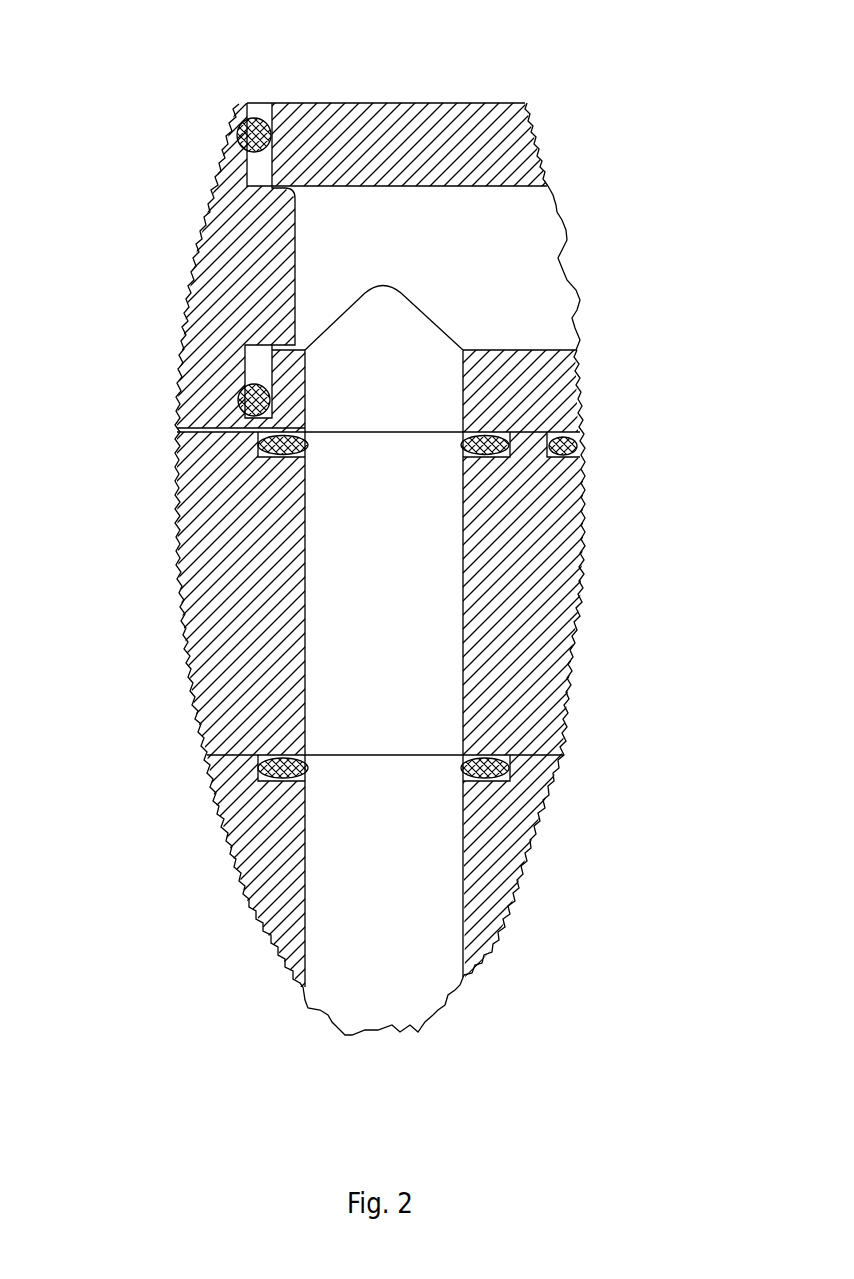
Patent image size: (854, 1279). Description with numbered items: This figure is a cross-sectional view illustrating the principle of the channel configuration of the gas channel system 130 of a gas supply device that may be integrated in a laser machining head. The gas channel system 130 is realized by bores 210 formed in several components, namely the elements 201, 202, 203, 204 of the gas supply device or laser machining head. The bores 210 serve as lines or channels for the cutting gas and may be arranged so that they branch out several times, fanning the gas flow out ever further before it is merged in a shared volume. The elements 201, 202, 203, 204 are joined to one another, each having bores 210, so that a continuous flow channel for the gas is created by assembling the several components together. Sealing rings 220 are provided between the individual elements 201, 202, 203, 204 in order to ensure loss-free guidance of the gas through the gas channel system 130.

The gas channel system 130 is at (633, 288).
The element 201 is at (270, 885).
The element 202 is at (222, 615).
The element 203 is at (410, 123).
The element 204 is at (232, 287).
The bores 210 is at (525, 263).
The sealing rings 220 is at (277, 122).